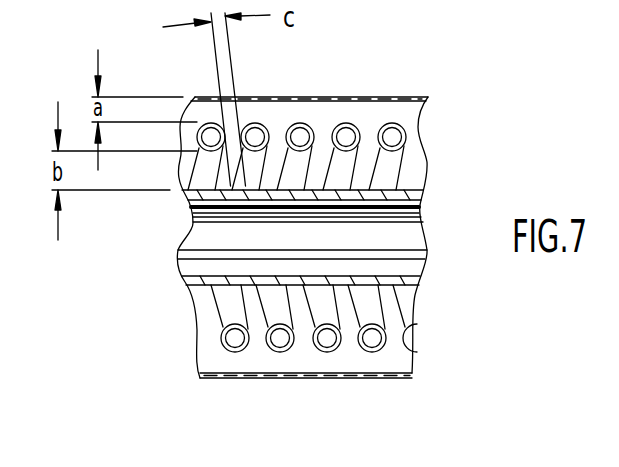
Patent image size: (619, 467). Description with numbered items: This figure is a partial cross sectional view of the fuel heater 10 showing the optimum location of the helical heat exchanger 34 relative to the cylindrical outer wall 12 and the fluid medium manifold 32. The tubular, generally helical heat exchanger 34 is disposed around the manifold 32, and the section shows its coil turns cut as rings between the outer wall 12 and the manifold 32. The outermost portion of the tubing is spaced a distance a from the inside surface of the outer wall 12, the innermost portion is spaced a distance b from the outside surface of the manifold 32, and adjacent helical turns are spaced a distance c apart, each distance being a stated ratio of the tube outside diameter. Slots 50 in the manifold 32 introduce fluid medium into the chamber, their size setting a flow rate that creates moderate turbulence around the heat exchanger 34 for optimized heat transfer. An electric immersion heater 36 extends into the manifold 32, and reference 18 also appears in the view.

The fuel heater 10 is at (190, 66).
The cylindrical outer wall 12 is at (396, 97).
The header 18 is at (618, 47).
The fluid medium manifold 32 is at (400, 190).
The heat exchanger 34 is at (344, 122).
The electric immersion heater 36 is at (207, 223).
The slots 50 is at (412, 222).